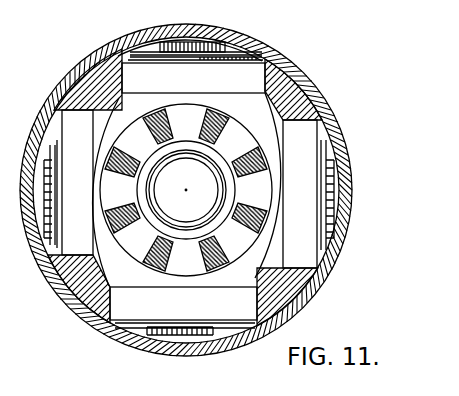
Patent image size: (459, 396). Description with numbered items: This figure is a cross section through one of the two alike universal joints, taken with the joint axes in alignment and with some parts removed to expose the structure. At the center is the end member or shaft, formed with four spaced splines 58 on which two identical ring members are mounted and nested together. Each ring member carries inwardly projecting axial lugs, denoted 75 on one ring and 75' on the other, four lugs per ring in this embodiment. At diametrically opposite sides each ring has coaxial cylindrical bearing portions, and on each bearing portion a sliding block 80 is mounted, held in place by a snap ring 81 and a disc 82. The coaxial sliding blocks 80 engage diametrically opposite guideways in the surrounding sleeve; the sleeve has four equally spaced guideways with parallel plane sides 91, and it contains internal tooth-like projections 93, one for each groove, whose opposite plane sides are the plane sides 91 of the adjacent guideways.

The splines 58 is at (147, 133).
The lug 75 is at (186, 141).
The lug 75' is at (152, 204).
The sliding block 80 is at (247, 77).
The snap ring 81 is at (229, 49).
The disc 82 is at (255, 58).
The plane sides 91 is at (293, 272).
The projections 93 is at (285, 290).